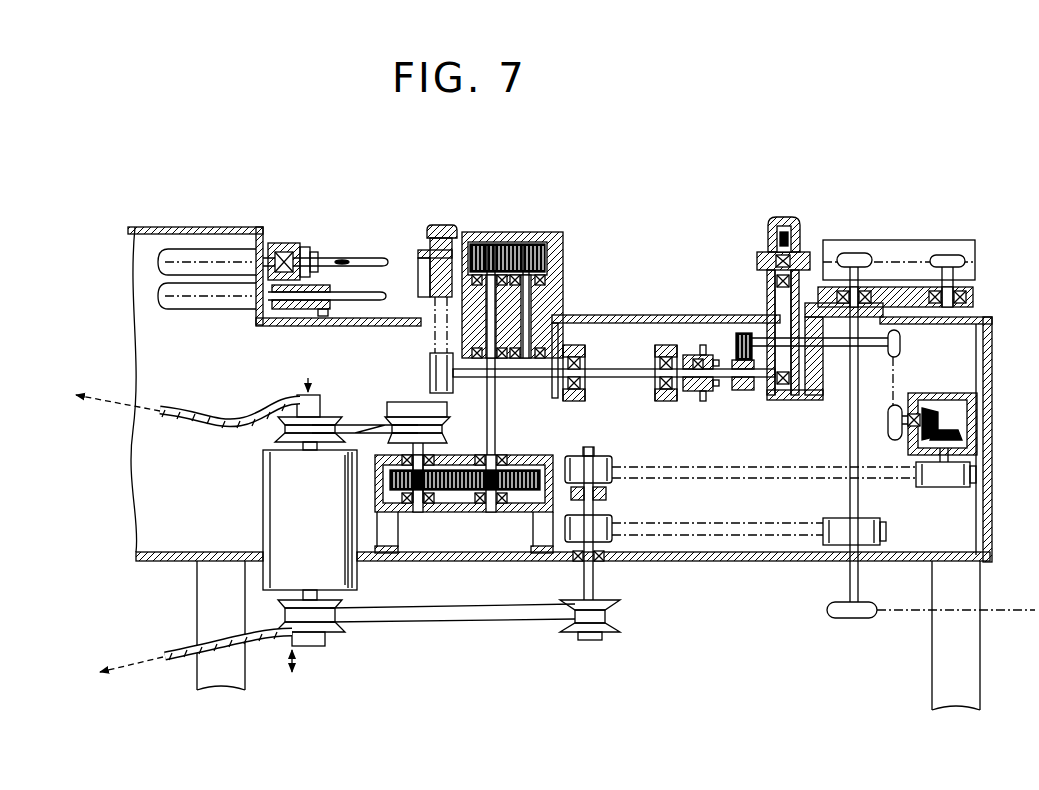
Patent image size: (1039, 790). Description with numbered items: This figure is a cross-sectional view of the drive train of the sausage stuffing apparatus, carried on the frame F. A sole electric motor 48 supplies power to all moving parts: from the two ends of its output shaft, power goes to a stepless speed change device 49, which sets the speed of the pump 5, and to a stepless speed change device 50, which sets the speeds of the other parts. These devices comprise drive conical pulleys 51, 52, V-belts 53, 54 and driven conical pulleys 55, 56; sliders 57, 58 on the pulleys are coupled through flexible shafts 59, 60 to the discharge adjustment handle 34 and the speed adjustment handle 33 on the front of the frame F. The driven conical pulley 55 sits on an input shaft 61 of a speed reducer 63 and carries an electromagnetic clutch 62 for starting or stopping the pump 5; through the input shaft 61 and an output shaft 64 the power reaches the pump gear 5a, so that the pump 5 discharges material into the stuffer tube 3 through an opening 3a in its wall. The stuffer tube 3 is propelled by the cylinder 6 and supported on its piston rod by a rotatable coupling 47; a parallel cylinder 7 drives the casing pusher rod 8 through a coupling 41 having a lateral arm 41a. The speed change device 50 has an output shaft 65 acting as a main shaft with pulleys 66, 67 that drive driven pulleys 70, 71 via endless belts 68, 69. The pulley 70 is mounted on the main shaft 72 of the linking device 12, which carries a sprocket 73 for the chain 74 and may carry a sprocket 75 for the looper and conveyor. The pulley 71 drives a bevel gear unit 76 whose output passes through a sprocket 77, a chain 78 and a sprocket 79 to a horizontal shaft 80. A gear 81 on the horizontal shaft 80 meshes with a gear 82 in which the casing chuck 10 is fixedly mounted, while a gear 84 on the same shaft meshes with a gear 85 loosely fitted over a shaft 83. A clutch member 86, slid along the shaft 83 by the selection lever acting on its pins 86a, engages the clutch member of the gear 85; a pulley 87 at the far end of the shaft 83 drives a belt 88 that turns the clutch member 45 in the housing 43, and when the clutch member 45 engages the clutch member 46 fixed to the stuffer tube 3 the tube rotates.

The stuffer tube 3 is at (369, 258).
The opening 3a is at (342, 258).
The stuffer pump 5 is at (531, 232).
The pump gear 5a is at (487, 244).
The cylinder 6 is at (182, 256).
The casing pusher cylinder 7 is at (218, 285).
The casing pusher rod 8 is at (372, 297).
The casing chuck 10 is at (758, 258).
The linking device 12 is at (886, 239).
The speed adjustment handle 33 is at (110, 674).
The discharge adjustment handle 34 is at (99, 393).
The coupling 41 is at (280, 310).
The lateral arm 41a is at (323, 316).
The housing 43 is at (440, 225).
The clutch member 45 is at (420, 250).
The clutch member 46 is at (311, 250).
The rotatable coupling 47 is at (283, 246).
The electric motor 48 is at (263, 488).
The stepless speed change device 49 is at (368, 417).
The stepless speed change device 50 is at (400, 622).
The drive conical pulley 51 is at (268, 410).
The drive conical pulley 52 is at (330, 633).
The V-belt 53 is at (326, 417).
The V-belt 54 is at (465, 620).
The driven conical pulley 55 is at (348, 465).
The driven conical pulley 56 is at (570, 632).
The slider 57 is at (297, 398).
The slider 58 is at (308, 646).
The flexible shaft 59 is at (188, 419).
The flexible shaft 60 is at (168, 660).
The input shaft 61 is at (420, 503).
The electromagnetic clutch 62 is at (418, 402).
The speed reducer 63 is at (470, 454).
The output shaft 64 is at (496, 430).
The output shaft 65 is at (584, 580).
The pulley 66 is at (612, 520).
The pulley 67 is at (586, 456).
The endless belt 68 is at (762, 562).
The endless belt 69 is at (733, 469).
The driven pulley 70 is at (878, 521).
The driven pulley 71 is at (951, 487).
The main shaft 72 is at (848, 455).
The sprocket 73 is at (850, 253).
The chain 74 is at (940, 262).
The sprocket 75 is at (856, 618).
The bevel gear unit 76 is at (960, 392).
The sprocket 77 is at (890, 432).
The chain 78 is at (896, 403).
The sprocket 79 is at (900, 343).
The horizontal shaft 80 is at (820, 385).
The gear 81 is at (767, 300).
The gear 82 is at (769, 228).
The shaft 83 is at (608, 378).
The gear 84 is at (744, 333).
The gear 85 is at (742, 390).
The clutch member 86 is at (690, 355).
The pins 86a is at (703, 345).
The pulley 87 is at (432, 370).
The belt 88 is at (434, 343).
The frame F is at (598, 315).